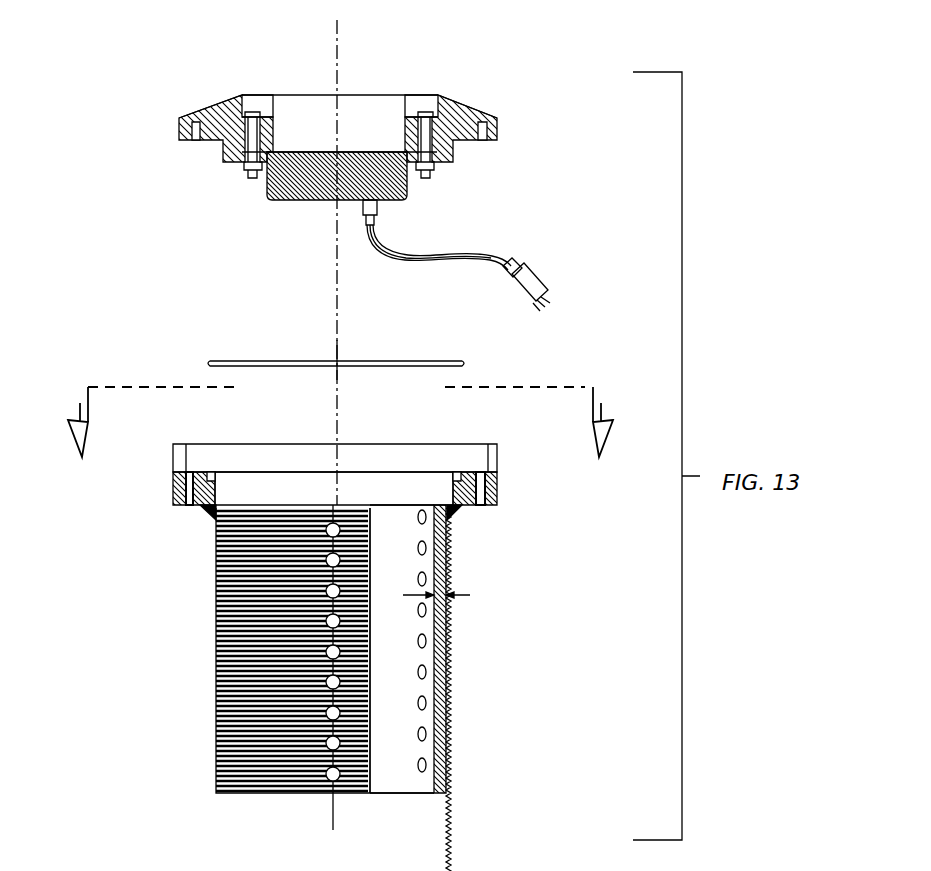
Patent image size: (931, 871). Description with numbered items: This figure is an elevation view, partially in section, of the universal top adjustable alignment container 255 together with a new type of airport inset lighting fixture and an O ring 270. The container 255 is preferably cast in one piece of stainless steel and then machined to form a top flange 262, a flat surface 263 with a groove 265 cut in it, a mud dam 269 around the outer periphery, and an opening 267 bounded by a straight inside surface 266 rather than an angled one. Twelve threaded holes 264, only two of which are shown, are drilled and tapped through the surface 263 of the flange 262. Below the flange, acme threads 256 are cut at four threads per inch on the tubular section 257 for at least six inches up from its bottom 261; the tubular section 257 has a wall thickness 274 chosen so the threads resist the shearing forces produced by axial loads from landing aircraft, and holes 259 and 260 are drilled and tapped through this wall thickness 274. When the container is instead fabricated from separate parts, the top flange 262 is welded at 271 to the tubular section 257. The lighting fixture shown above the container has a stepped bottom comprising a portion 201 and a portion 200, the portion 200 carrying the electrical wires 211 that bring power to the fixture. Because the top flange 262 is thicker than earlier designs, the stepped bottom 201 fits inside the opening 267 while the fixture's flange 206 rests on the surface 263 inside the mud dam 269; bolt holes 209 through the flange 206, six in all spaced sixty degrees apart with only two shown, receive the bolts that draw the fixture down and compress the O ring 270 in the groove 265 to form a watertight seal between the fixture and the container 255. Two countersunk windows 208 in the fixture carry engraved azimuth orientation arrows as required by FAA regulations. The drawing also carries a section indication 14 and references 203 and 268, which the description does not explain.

The section line 14- 14 is at (331, 422).
The portion of stepped bottom 200 is at (280, 202).
The stepped bottom portion 201 is at (232, 163).
The cap assembly 203 is at (432, 0).
The flange 206 is at (194, 130).
The countersunk windows 208 is at (262, 104).
The bolt holes 209 is at (196, 118).
The electrical wires 211 is at (490, 258).
The universal top adjustable alignment container 255 is at (152, 612).
The acme threads 256 is at (213, 712).
The tubular section 257 is at (213, 650).
The holes 259 is at (415, 735).
The holes 260 is at (330, 782).
The bottom of tubular section 261 is at (433, 793).
The top flange 262 is at (172, 490).
The flat surface 263 is at (180, 444).
The threaded holes 264 is at (190, 504).
The groove 265 is at (207, 477).
The straight inside surface 266 is at (218, 488).
The opening 267 is at (318, 462).
The central axis 268 is at (337, 68).
The mud dam 269 is at (172, 462).
The O ring 270 is at (450, 362).
The weld 271 is at (213, 517).
The wall thickness 274 is at (466, 596).